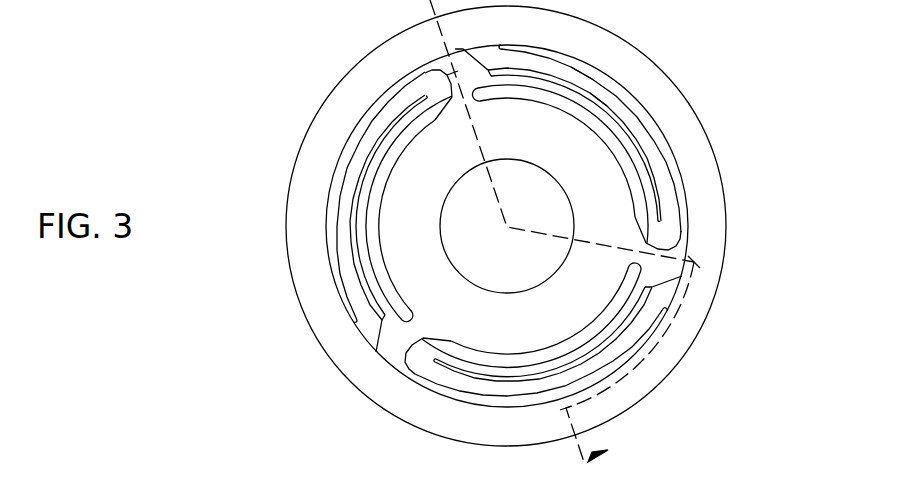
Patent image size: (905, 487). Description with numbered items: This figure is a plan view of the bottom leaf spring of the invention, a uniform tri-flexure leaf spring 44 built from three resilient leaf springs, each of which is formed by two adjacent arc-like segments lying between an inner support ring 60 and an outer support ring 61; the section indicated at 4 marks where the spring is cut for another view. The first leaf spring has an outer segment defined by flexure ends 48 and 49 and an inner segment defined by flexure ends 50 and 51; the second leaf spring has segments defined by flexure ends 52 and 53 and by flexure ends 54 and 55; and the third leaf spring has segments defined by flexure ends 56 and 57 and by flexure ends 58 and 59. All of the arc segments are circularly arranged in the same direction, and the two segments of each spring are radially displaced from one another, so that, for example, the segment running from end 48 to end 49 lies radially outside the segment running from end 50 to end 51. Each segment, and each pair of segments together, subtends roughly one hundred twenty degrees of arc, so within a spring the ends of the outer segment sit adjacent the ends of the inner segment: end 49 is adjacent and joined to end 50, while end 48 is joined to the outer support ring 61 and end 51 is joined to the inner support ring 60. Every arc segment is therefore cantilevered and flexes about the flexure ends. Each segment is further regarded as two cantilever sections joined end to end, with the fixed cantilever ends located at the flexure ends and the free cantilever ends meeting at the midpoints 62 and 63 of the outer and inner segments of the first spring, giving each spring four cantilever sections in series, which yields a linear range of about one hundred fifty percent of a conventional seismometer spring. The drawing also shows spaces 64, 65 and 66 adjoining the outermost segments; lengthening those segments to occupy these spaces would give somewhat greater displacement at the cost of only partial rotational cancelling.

The section line 4- 4 is at (565, 232).
The uniform tri-flexure leaf spring 44 is at (407, 424).
The flexure end 48 is at (503, 52).
The flexure end 49 is at (666, 220).
The flexure end 50 is at (647, 223).
The flexure end 51 is at (476, 100).
The flexure end 52 is at (665, 312).
The flexure end 53 is at (433, 362).
The flexure end 54 is at (430, 370).
The flexure end 55 is at (637, 262).
The flexure end 56 is at (392, 343).
The flexure end 57 is at (425, 82).
The flexure end 58 is at (422, 98).
The flexure end 59 is at (372, 327).
The inner support ring 60 is at (423, 173).
The outer support ring 61 is at (305, 226).
The free cantilever end 62 is at (607, 100).
The free cantilever end 63 is at (600, 120).
The space 64 is at (438, 57).
The space 65 is at (437, 352).
The space 66 is at (640, 256).